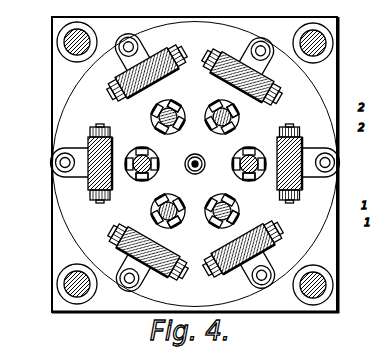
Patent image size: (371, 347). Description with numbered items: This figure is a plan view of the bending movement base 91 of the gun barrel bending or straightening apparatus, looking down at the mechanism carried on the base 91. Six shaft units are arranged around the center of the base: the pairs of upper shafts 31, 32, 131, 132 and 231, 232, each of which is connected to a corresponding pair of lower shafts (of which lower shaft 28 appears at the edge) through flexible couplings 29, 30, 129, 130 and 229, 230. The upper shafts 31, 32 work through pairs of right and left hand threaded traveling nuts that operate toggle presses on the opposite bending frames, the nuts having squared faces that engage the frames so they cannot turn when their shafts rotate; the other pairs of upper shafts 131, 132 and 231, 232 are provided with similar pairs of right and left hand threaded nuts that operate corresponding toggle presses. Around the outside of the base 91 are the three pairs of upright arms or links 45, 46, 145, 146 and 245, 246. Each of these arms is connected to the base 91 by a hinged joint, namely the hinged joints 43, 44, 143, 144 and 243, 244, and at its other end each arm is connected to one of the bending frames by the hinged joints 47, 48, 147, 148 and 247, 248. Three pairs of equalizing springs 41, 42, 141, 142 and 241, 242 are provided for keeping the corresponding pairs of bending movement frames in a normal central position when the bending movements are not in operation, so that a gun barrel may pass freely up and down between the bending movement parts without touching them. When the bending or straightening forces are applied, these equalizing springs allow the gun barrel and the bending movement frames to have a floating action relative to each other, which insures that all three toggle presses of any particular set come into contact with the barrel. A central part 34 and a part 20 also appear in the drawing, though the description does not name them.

The base 91 is at (330, 252).
The equalizing spring 41 is at (335, 152).
The equalizing spring 42 is at (57, 178).
The hinged joint 44 is at (96, 172).
The upright arm 46 is at (88, 186).
The hinged joint 48 is at (99, 203).
The hinged joint 43 is at (301, 155).
The upright arm 45 is at (302, 184).
The hinged joint 47 is at (290, 124).
The equalizing spring 241 is at (127, 38).
The upright arm 245 is at (128, 78).
The hinged joint 243 is at (180, 42).
The hinged joint 247 is at (111, 101).
The equalizing spring 142 is at (266, 41).
The upright arm 146 is at (265, 73).
The hinged joint 144 is at (226, 36).
The hinged joint 148 is at (212, 56).
The equalizing spring 141 is at (122, 282).
The upright arm 145 is at (132, 250).
The hinged joint 143 is at (117, 226).
The hinged joint 147 is at (112, 229).
The equalizing spring 242 is at (258, 282).
The upright arm 246 is at (262, 246).
The hinged joint 244 is at (278, 226).
The hinged joint 248 is at (211, 261).
The upper shaft 231 is at (152, 117).
The flexible coupling 229 is at (172, 104).
The flexible coupling 130 is at (238, 113).
The upper shaft 132 is at (229, 128).
The upper shaft 32 is at (156, 157).
The flexible coupling 30 is at (154, 176).
The upper shaft 31 is at (244, 152).
The flexible coupling 29 is at (236, 176).
The upper shaft 131 is at (153, 212).
The flexible coupling 129 is at (171, 224).
The upper shaft 232 is at (236, 197).
The flexible coupling 230 is at (237, 209).
The central shaft 34 is at (203, 158).
The lower shaft 28 is at (369, 163).
The adjacent part (partial) 20 is at (369, 187).